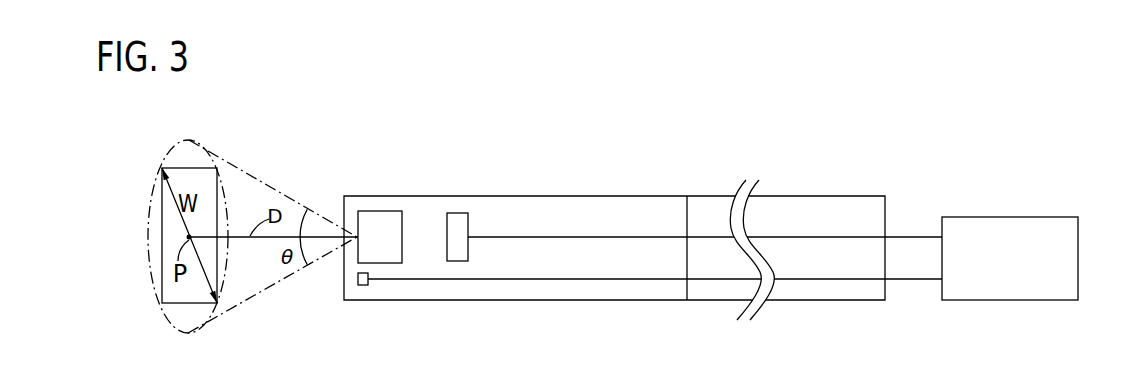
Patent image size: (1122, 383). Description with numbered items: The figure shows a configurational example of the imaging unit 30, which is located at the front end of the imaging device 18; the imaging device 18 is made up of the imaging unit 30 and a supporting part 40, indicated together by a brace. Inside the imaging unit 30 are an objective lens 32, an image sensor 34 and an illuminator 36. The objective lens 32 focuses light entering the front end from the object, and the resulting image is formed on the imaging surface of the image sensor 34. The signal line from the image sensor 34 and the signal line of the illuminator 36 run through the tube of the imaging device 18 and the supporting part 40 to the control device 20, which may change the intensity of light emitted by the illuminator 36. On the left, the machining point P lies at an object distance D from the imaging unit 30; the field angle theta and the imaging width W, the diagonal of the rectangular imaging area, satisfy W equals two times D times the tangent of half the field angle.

The imaging device 18 is at (599, 156).
The control device 20 is at (1003, 216).
The imaging unit 30 is at (583, 196).
The objective lens 32 is at (377, 210).
The image sensor 34 is at (457, 212).
The illuminator 36 is at (362, 288).
The supporting part 40 is at (810, 196).